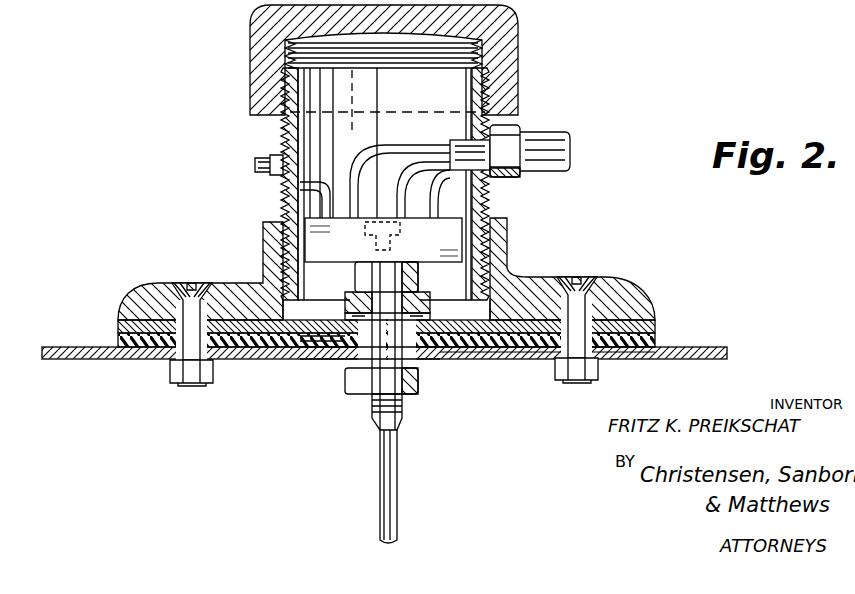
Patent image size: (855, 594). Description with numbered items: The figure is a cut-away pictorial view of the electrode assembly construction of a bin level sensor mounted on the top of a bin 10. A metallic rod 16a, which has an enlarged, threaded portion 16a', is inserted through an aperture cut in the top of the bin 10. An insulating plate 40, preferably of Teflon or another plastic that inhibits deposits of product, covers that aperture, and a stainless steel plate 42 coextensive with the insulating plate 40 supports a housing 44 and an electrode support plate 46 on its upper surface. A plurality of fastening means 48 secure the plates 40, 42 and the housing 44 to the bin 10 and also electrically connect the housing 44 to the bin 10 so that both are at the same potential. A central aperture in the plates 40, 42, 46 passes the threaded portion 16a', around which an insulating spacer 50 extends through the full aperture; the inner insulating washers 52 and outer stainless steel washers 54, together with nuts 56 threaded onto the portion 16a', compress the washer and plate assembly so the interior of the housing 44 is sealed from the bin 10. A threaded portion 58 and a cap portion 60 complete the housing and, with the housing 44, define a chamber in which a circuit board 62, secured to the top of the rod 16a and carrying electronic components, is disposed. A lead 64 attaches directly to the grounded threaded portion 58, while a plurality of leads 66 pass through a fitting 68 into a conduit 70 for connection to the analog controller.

The bin 10 is at (76, 347).
The metallic rod 16a is at (417, 486).
The enlarged threaded portion 16a' is at (420, 424).
The insulating plate 40 is at (660, 340).
The stainless steel plate 42 is at (660, 323).
The housing 44 is at (627, 290).
The electrode support plate 46 is at (276, 352).
The fastening means 48 is at (190, 282).
The insulating spacer 50 is at (322, 355).
The threaded stem 52 is at (420, 286).
The washers 54 is at (430, 300).
The nuts 56 is at (355, 278).
The threaded portion 58 is at (284, 128).
The cap portion 60 is at (268, 53).
The circuit board 62 is at (462, 233).
The lead 64 is at (282, 193).
The leads 66 is at (437, 143).
The fitting 68 is at (512, 96).
The conduit 70 is at (540, 135).